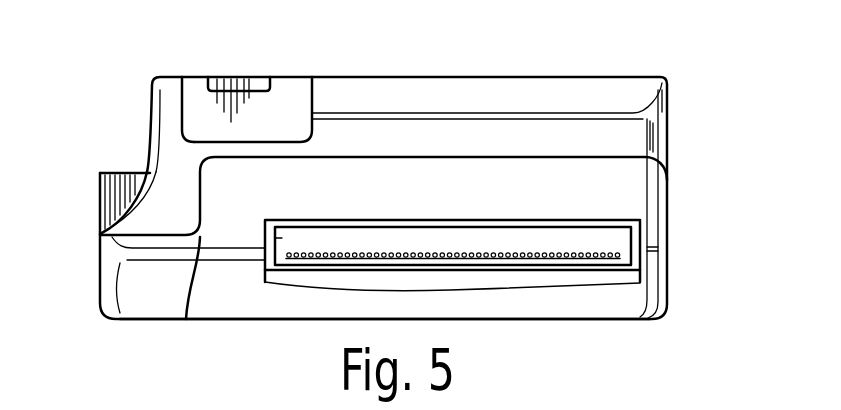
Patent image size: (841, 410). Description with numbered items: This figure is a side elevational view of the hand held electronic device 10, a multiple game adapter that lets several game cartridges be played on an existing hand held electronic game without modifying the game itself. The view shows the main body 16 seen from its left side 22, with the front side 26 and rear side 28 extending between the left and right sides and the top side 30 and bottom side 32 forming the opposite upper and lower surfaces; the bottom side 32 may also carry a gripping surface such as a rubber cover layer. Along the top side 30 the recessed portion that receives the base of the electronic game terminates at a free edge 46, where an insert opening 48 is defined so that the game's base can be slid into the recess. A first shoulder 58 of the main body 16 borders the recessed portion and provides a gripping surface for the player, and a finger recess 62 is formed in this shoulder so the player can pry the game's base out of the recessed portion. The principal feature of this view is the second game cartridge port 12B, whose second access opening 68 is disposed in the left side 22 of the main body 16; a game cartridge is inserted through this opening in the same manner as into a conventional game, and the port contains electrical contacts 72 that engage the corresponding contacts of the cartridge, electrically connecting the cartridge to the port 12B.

The hand held electronic device 10 is at (454, 64).
The top side 30 is at (600, 77).
The main body 16 is at (146, 119).
The insert opening 48 is at (138, 166).
The free edge 46 is at (100, 177).
The finger recess 62 is at (312, 100).
The first shoulder 58 is at (374, 92).
The left side 22 is at (610, 158).
The rear side 28 is at (100, 275).
The bottom side 32 is at (213, 320).
The second game cartridge port 12B is at (455, 221).
The second access opening 68 is at (275, 238).
The electrical contacts 72 is at (570, 254).
The front side 26 is at (667, 282).